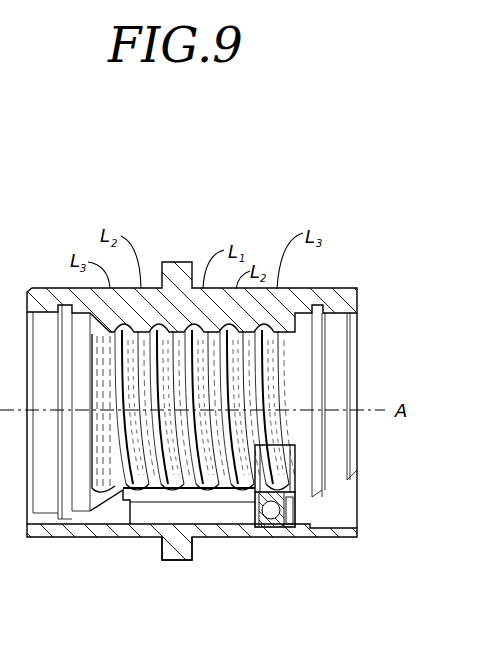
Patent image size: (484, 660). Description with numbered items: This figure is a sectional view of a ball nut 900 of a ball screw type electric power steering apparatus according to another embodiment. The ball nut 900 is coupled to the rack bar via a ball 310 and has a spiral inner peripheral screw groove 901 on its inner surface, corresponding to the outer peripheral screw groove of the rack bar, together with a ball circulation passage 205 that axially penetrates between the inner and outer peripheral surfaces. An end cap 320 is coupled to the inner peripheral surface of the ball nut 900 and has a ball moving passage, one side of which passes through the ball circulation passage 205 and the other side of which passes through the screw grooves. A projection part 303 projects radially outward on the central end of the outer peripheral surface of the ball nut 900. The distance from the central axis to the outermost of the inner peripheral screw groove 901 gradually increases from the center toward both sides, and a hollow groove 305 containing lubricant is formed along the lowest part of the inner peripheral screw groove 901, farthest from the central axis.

The ball nut 900 is at (366, 282).
The inner peripheral screw groove 901 is at (212, 489).
The groove 305 is at (102, 497).
The ball circulation passage 205 is at (163, 515).
The projection part 303 is at (180, 563).
The ball 310 is at (283, 453).
The end cap 320 is at (282, 528).